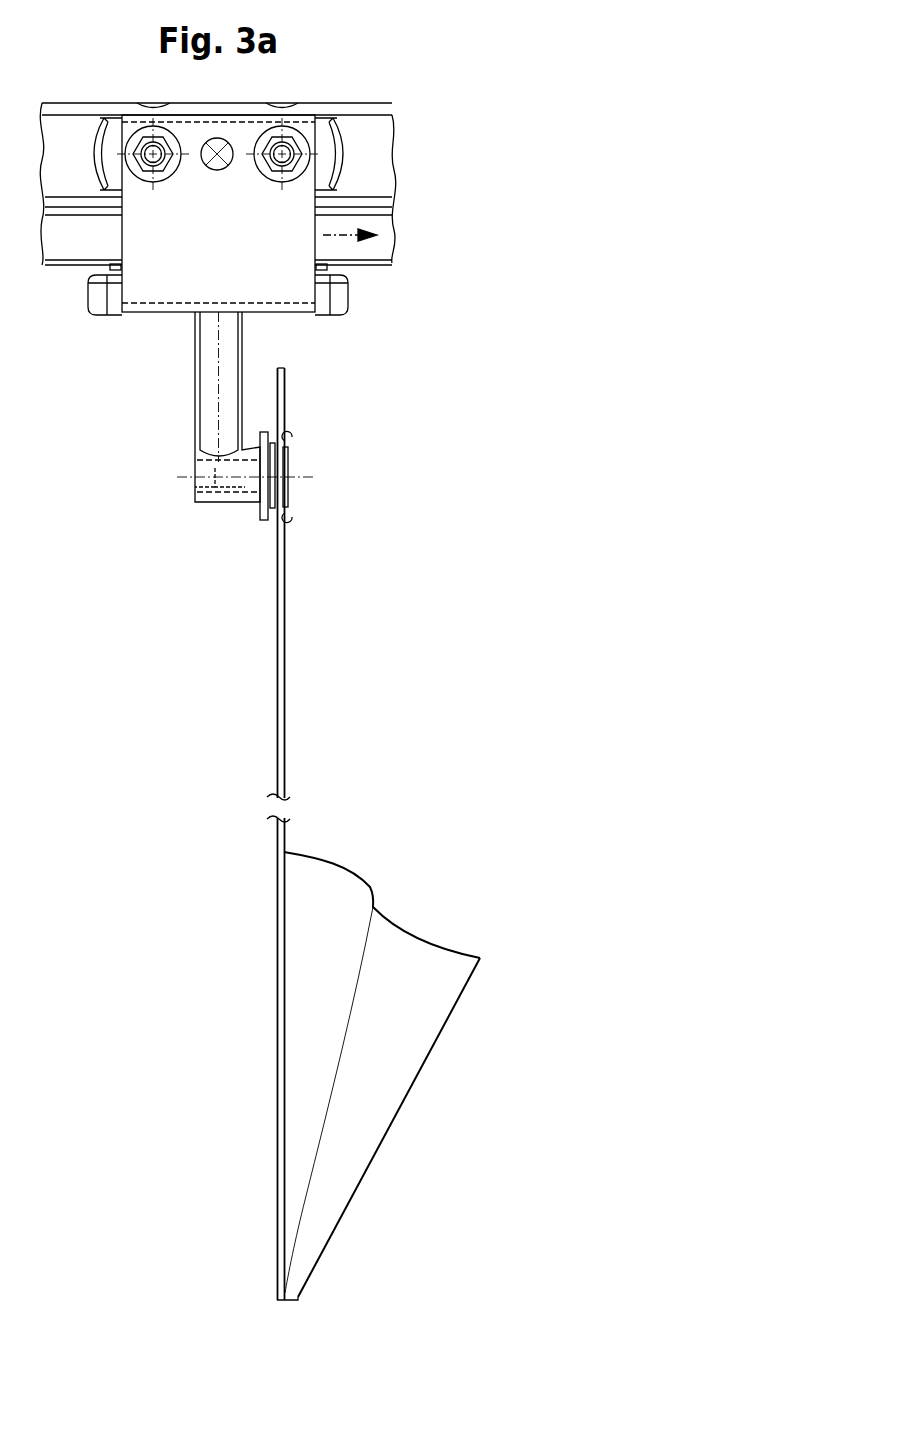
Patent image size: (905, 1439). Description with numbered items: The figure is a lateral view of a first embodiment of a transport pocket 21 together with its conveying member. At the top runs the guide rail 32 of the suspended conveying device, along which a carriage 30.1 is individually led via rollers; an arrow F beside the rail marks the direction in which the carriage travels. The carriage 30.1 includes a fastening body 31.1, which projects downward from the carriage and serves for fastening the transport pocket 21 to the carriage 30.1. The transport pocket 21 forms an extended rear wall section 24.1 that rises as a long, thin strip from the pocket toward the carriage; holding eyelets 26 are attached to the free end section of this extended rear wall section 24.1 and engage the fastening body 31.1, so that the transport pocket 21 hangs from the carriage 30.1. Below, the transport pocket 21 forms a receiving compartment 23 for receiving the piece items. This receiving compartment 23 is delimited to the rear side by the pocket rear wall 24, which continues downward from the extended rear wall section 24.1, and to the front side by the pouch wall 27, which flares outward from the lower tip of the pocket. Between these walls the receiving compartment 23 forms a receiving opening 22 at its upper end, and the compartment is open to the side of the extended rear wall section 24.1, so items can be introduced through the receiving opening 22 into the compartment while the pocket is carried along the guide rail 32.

The guide rail 32 is at (372, 168).
The carriage 30.1 is at (252, 282).
The fastening body 31.1 is at (210, 430).
The holding eyelets 26 is at (289, 463).
The extended rear wall section 24.1 is at (277, 655).
The pocket rear wall 24 is at (277, 965).
The receiving opening 22 is at (386, 885).
The pouch wall 27 is at (452, 1015).
The receiving compartment 23 is at (340, 1173).
The transport pocket 21 is at (414, 1112).
The direction of travel F is at (350, 242).